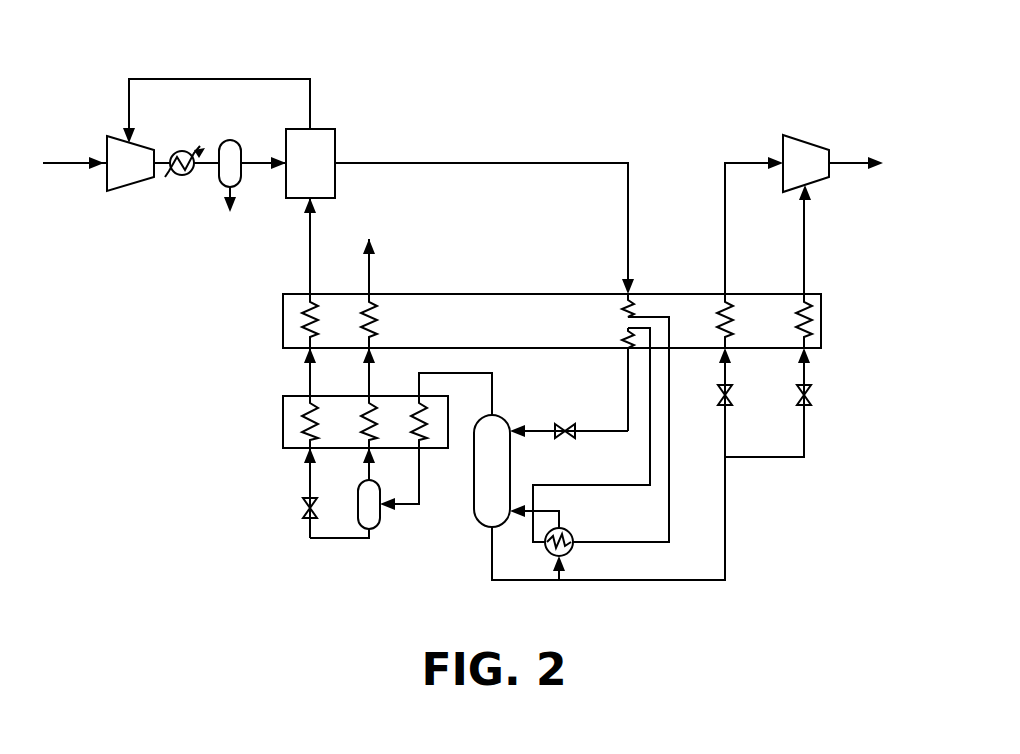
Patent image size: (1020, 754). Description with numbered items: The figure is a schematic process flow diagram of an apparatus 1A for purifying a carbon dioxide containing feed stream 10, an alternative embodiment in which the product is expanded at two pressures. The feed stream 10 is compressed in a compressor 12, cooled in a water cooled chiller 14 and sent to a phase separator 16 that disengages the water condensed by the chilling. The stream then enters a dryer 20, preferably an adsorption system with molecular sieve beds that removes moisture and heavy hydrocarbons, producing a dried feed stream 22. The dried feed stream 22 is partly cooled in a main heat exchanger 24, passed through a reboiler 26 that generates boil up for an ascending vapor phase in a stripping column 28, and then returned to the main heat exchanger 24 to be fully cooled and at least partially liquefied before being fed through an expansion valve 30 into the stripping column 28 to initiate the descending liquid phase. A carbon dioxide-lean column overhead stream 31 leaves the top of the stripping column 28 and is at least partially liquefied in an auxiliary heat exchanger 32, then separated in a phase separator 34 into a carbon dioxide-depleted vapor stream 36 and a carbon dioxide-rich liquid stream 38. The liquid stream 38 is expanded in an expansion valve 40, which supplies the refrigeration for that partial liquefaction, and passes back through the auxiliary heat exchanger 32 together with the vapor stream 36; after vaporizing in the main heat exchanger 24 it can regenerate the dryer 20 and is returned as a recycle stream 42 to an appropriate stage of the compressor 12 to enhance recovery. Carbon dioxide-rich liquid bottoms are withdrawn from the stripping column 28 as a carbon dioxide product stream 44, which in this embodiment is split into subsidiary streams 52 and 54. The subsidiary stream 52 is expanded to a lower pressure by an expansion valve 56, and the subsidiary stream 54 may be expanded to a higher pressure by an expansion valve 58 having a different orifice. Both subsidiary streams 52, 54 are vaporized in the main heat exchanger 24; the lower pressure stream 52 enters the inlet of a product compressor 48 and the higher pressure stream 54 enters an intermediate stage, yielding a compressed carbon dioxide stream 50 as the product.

The apparatus 1A is at (690, 88).
The carbon dioxide containing feed stream 10 is at (63, 162).
The compressor 12 is at (127, 176).
The water cooled chiller 14 is at (188, 178).
The phase separator 16 is at (230, 152).
The dryer 20 is at (329, 143).
The dried feed stream 22 is at (481, 162).
The main heat exchanger 24 is at (510, 307).
The reboiler 26 is at (570, 533).
The stripping column 28 is at (478, 492).
The expansion valve 30 is at (575, 427).
The column overhead stream 31 is at (494, 388).
The auxiliary heat exchanger 32 is at (290, 420).
The phase separator 34 is at (373, 518).
The carbon dioxide-depleted vapor stream 36 is at (372, 460).
The carbon dioxide-rich liquid stream 38 is at (338, 540).
The expansion valve 40 is at (307, 510).
The recycle stream 42 is at (228, 79).
The carbon dioxide product stream 44 is at (617, 582).
The product compressor 48 is at (800, 148).
The compressed carbon dioxide stream 50 is at (846, 158).
The subsidiary stream 52 is at (728, 427).
The subsidiary stream 54 is at (806, 427).
The expansion valve 56 is at (722, 407).
The expansion valve 58 is at (808, 395).